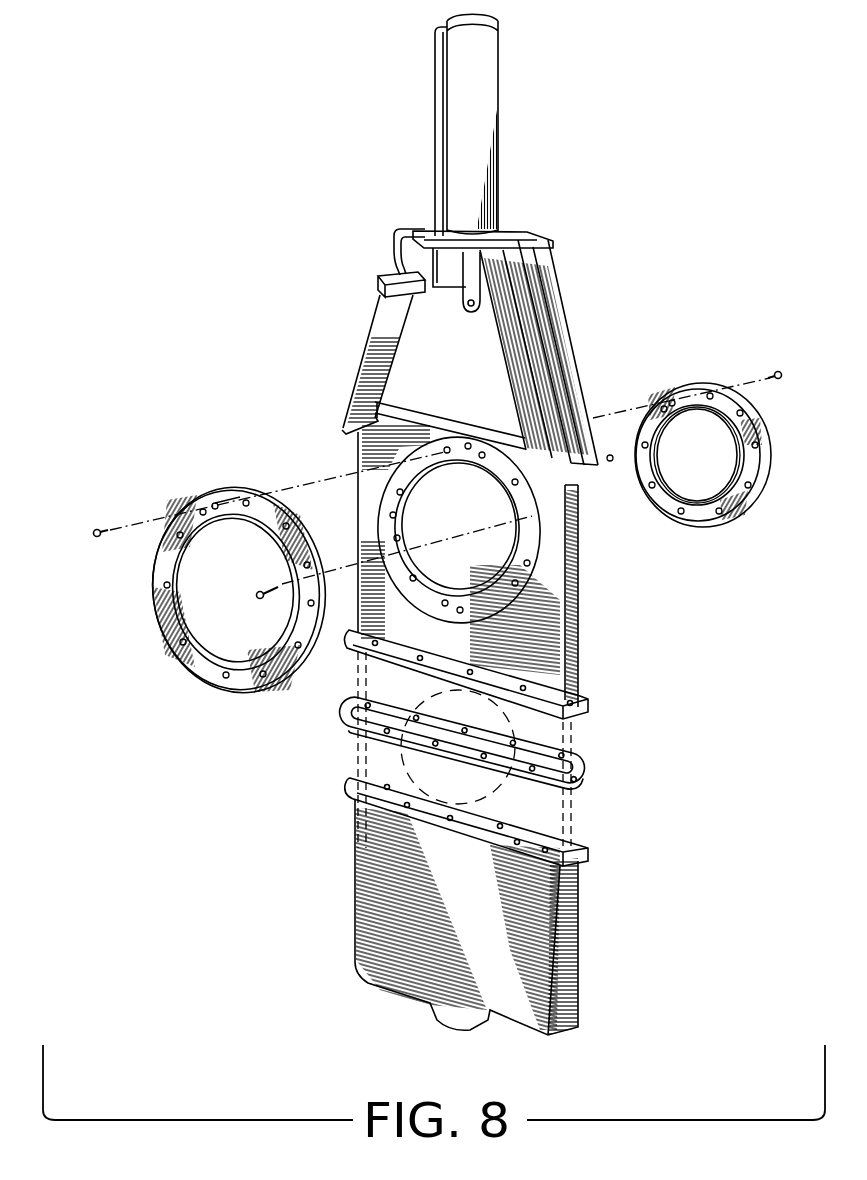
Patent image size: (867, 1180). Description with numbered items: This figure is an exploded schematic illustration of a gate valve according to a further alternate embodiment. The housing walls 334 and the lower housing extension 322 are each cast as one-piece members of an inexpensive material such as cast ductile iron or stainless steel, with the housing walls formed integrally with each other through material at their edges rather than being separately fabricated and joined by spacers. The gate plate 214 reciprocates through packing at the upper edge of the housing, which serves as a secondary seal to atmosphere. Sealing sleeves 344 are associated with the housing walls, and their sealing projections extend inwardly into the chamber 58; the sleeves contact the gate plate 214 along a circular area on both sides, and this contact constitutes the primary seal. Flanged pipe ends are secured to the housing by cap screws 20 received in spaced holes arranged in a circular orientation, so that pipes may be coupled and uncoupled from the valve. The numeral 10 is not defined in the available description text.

The gate plate 214 is at (457, 391).
The housing walls 334 is at (571, 664).
The lower housing extension 322 is at (575, 986).
The sealing sleeves 344 is at (155, 635).
The chamber 58 is at (529, 566).
The cap screws 20 is at (258, 603).
The flow port 10 is at (627, 436).